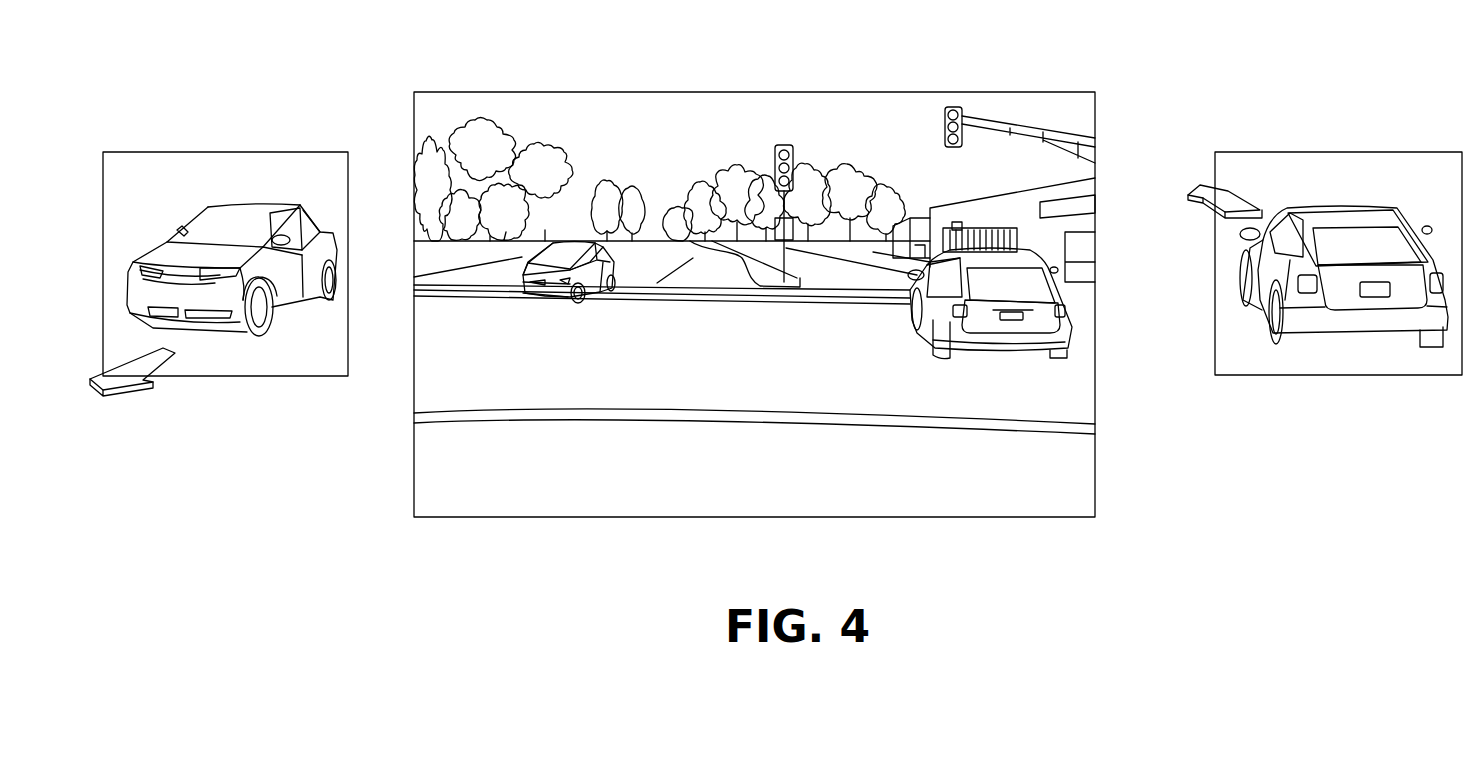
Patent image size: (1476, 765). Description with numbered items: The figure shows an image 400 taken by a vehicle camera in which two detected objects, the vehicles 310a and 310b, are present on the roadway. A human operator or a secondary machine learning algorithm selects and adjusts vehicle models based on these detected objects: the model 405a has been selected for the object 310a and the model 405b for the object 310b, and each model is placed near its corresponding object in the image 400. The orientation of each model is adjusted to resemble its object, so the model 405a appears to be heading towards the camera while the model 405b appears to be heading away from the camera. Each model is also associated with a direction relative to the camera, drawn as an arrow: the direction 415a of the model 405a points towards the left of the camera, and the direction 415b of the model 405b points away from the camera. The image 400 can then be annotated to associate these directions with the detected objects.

The image 400 is at (481, 51).
The object 310a is at (514, 277).
The object 310b is at (1076, 334).
The model 405a is at (270, 376).
The model 405b is at (1345, 375).
The direction 415a is at (120, 398).
The direction 415b is at (1243, 188).